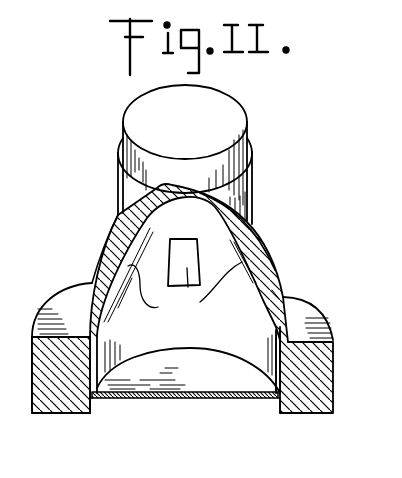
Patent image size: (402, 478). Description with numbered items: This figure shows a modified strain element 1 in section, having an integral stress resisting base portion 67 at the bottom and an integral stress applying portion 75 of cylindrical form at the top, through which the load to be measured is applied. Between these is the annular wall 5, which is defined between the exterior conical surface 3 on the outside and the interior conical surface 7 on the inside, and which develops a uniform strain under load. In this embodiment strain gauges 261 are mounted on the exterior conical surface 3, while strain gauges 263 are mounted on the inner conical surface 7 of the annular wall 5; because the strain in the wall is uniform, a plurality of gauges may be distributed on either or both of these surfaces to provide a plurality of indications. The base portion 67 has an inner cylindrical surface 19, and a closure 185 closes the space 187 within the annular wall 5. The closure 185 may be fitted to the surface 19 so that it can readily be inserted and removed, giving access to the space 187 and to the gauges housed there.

The strain element 1 is at (257, 230).
The exterior conical surface 3 is at (268, 328).
The annular wall 5 is at (278, 295).
The interior conical surface 7 is at (263, 310).
The inner cylindrical surface 19 is at (280, 368).
The stress resisting base portion 67 is at (59, 401).
The stress applying portion 75 is at (252, 191).
The closure 185 is at (199, 384).
The space 187 is at (276, 327).
The strain gauges 261 is at (99, 282).
The strain gauges 263 is at (187, 288).